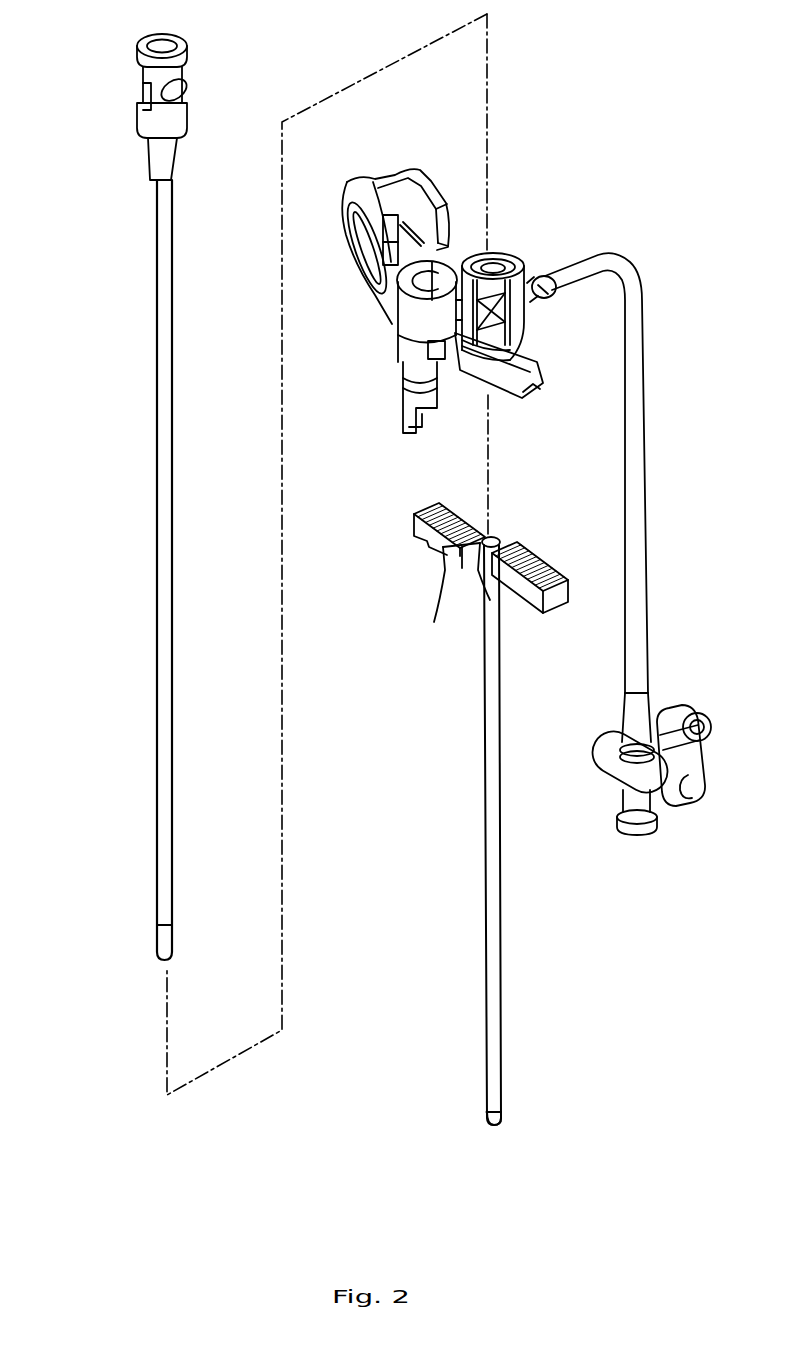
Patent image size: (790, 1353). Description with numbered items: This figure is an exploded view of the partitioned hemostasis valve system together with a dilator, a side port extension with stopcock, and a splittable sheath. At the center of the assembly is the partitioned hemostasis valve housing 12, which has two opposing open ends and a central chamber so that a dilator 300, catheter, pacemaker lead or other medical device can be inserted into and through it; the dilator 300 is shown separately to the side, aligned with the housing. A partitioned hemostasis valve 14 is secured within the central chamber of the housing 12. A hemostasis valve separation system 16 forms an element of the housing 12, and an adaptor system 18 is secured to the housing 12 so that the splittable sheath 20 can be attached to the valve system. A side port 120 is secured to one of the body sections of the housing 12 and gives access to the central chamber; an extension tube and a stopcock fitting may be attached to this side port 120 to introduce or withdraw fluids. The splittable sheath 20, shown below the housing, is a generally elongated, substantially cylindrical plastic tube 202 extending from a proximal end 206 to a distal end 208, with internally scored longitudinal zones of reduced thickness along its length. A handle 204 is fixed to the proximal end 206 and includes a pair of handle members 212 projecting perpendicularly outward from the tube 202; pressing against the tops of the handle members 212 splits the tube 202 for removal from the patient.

The partitioned hemostasis valve housing 12 is at (407, 347).
The partitioned hemostasis valve 14 is at (520, 262).
The hemostasis valve separation system 16 is at (433, 170).
The adaptor system 18 is at (560, 391).
The splittable sheath 20 is at (425, 858).
The side port 120 is at (540, 303).
The tube 202 is at (490, 912).
The handle 204 is at (543, 562).
The proximal end 206 is at (492, 537).
The distal end 208 is at (496, 1139).
The handle members 212 is at (490, 593).
The dilator 300 is at (160, 357).